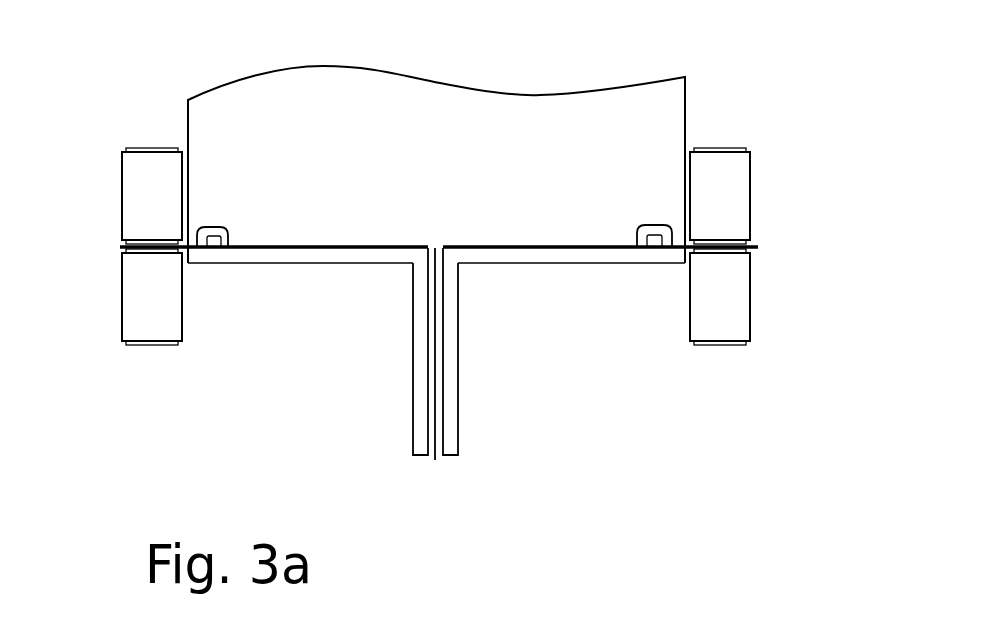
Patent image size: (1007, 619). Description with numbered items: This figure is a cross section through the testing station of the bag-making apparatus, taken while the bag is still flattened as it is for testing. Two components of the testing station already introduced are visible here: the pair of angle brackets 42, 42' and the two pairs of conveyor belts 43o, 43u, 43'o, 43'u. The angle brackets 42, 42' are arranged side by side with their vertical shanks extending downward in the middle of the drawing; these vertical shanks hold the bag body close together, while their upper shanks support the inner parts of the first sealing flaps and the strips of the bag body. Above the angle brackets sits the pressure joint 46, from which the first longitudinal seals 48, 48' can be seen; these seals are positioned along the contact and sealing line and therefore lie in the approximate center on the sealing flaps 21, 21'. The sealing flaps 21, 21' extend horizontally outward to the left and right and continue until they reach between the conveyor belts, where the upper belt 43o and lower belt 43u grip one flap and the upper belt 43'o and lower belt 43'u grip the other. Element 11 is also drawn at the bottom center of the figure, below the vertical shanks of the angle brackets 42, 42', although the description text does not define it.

The pressure joint 46 is at (268, 128).
The sealing flap 21 is at (233, 219).
The sealing flap 21' is at (635, 224).
The conveyor belt 43o is at (145, 192).
The conveyor belt 43u is at (148, 315).
The conveyor belt 43'o is at (768, 152).
The conveyor belt 43'u is at (755, 342).
The first longitudinal seal 48 is at (237, 298).
The first longitudinal seal 48' is at (640, 306).
The angle bracket 42 is at (360, 360).
The angle bracket 42' is at (501, 370).
The central partition / blade 11 is at (435, 460).